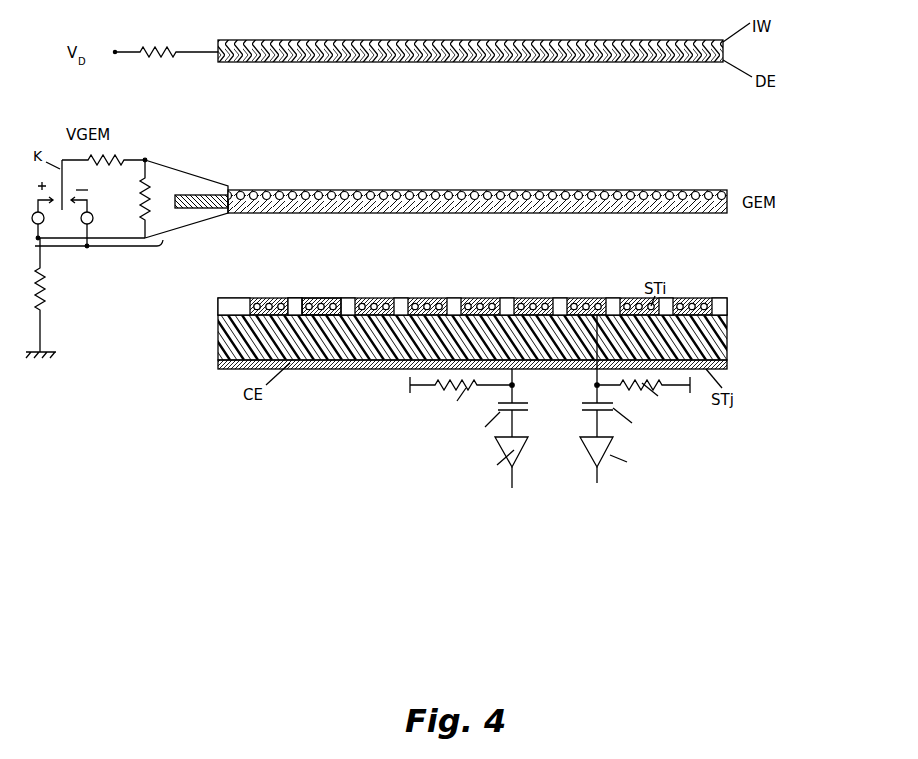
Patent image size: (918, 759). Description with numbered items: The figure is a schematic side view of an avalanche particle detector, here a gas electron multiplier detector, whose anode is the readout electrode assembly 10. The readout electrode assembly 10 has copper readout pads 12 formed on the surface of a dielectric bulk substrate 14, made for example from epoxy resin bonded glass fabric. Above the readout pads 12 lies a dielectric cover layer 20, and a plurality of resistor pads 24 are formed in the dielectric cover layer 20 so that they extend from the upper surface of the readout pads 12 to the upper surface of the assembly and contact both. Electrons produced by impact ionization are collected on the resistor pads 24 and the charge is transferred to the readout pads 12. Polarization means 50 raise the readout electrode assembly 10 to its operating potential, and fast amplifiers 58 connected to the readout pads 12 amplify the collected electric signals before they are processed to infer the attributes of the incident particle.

The readout electrode assembly 10 is at (712, 293).
The readout pads 12 is at (346, 312).
The bulk substrate 14 is at (743, 344).
The dielectric cover layer 20 is at (226, 300).
The resistor pads 24 is at (306, 300).
The polarization means 50 is at (566, 401).
The fast amplifiers 58 is at (523, 451).